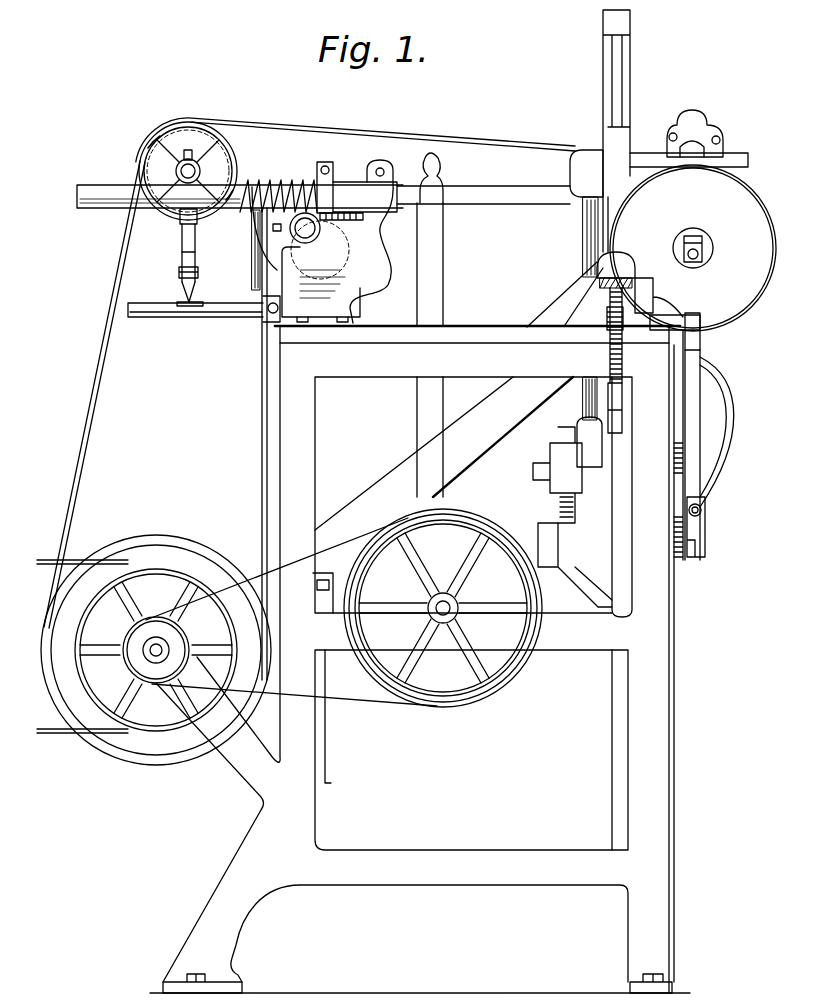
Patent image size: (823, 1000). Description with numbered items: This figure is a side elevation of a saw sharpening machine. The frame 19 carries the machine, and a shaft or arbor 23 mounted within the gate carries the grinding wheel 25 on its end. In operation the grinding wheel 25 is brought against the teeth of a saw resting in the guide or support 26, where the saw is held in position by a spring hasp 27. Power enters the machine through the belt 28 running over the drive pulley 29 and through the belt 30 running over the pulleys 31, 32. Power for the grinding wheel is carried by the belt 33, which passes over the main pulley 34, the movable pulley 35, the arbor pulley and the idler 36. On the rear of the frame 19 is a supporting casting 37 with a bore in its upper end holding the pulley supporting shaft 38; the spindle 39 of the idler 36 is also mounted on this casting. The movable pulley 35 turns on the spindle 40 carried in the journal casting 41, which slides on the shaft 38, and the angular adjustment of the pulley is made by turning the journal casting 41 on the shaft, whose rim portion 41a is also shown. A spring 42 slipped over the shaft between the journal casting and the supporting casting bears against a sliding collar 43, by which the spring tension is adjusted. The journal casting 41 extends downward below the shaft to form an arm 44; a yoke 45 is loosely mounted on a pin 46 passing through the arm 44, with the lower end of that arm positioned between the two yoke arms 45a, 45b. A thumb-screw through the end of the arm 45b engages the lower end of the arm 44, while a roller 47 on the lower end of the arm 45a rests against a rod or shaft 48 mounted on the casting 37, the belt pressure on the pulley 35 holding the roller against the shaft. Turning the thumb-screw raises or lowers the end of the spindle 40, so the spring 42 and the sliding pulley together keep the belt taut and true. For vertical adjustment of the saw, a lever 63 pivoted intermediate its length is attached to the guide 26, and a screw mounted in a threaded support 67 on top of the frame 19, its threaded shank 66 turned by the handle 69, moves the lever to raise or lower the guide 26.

The frame 19 is at (305, 461).
The shaft or arbor 23 is at (720, 157).
The grinding wheel 25 is at (742, 207).
The guide or support 26 is at (700, 328).
The spring hasp 27 is at (730, 433).
The belt 28 is at (73, 561).
The drive pulley 29 is at (220, 598).
The belt 30 is at (364, 694).
The pulley 31 is at (129, 633).
The pulley 32 is at (463, 527).
The belt 33 is at (115, 284).
The main pulley 34 is at (167, 536).
The movable pulley 35 is at (164, 144).
The idler 36 is at (273, 242).
The supporting casting 37 is at (380, 230).
The pulley supporting shaft 38 is at (97, 190).
The spindle 39 is at (309, 235).
The spindle 40 is at (211, 140).
The journal casting 41 is at (233, 189).
The pulley rim flange 41a is at (148, 148).
The spring 42 is at (270, 183).
The sliding collar 43 is at (327, 178).
The arm 44 is at (197, 222).
The yoke 45 is at (182, 232).
The arm of yoke 45a is at (197, 293).
The arm of yoke 45b is at (185, 251).
The pin 46 is at (196, 273).
The roller 47 is at (185, 308).
The rod or shaft 48 is at (148, 314).
The lever 63 is at (622, 435).
The threaded shaft 66 is at (610, 358).
The threaded support 67 is at (607, 314).
The handle 69 is at (607, 282).